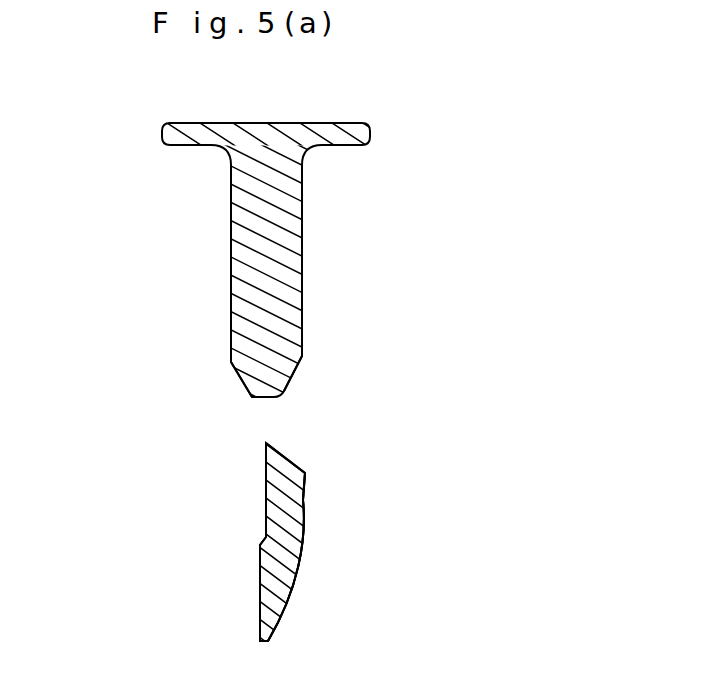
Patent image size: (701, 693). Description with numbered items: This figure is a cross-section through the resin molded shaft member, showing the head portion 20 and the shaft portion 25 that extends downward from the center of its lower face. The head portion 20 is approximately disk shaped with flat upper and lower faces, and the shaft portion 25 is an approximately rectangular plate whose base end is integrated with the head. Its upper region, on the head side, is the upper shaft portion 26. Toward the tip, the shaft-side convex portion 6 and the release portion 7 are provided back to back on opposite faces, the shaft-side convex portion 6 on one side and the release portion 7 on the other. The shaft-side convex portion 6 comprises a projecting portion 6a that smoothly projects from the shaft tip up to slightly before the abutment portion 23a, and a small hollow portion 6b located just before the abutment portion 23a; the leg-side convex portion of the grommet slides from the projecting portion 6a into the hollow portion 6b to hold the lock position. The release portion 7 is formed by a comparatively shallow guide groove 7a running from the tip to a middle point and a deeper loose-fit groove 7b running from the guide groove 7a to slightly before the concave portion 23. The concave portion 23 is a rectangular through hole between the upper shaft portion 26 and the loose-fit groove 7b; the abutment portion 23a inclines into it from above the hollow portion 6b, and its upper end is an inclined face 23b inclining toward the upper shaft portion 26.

The head portion 20 is at (181, 128).
The upper shaft portion 26 is at (231, 212).
The shaft portion 25 is at (232, 246).
The inclined face 23b is at (238, 376).
The concave portion 23 is at (265, 400).
The abutment portion 23a is at (287, 457).
The shaft-side convex portion 6 is at (378, 472).
The projecting portion 6a is at (306, 504).
The hollow portion 6b is at (305, 483).
The release portion 7 is at (190, 502).
The guide groove 7a is at (262, 563).
The loose-fit groove 7b is at (266, 503).